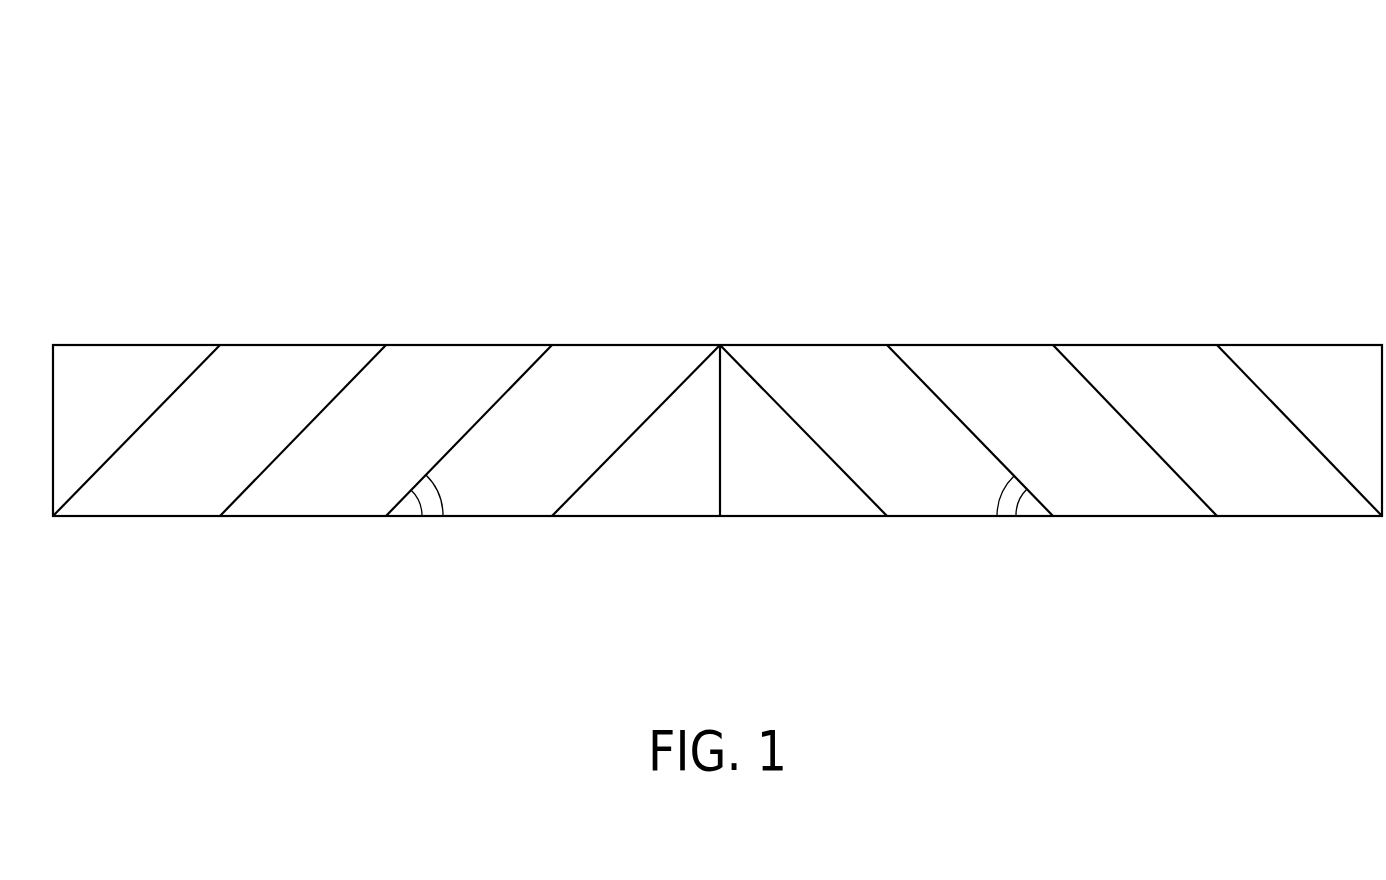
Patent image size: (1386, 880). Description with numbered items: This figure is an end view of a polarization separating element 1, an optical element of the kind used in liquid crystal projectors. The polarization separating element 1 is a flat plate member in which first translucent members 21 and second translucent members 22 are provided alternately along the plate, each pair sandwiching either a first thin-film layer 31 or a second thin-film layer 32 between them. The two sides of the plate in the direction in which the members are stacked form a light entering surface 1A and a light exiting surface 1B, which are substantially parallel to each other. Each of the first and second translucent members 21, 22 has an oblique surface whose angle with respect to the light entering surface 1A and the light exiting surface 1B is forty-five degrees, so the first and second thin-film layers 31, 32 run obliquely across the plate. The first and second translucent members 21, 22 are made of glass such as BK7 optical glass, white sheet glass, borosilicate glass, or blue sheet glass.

The polarization separating element 1 is at (1215, 157).
The light entering surface 1A is at (903, 517).
The light exiting surface 1B is at (812, 343).
The first translucent member 21 is at (305, 505).
The second translucent member 22 is at (152, 505).
The first thin-film layer 31 is at (275, 462).
The second thin-film layer 32 is at (145, 425).